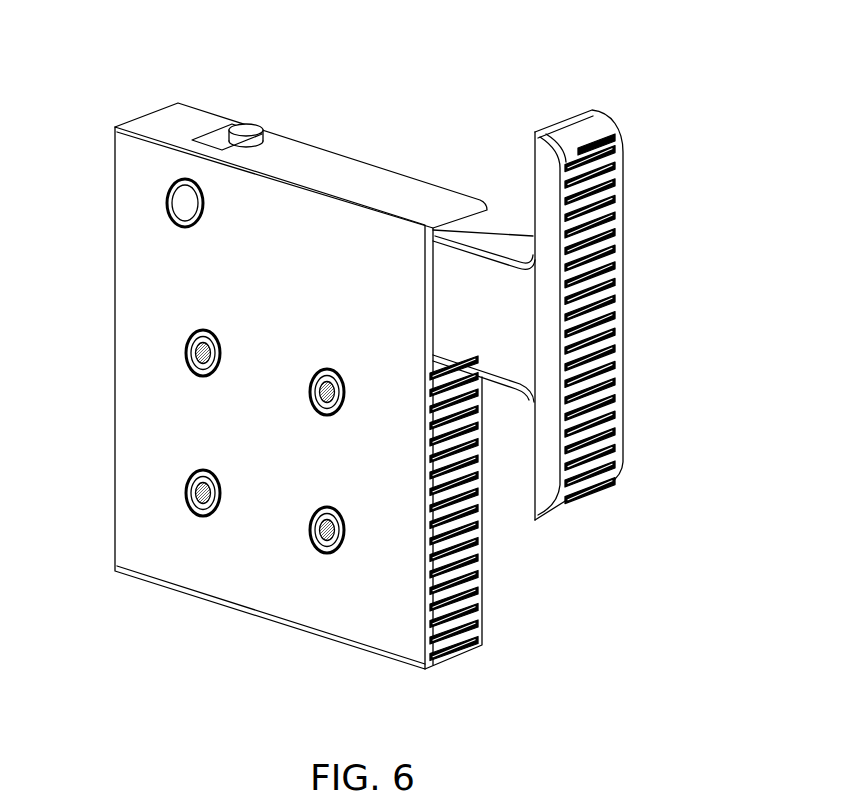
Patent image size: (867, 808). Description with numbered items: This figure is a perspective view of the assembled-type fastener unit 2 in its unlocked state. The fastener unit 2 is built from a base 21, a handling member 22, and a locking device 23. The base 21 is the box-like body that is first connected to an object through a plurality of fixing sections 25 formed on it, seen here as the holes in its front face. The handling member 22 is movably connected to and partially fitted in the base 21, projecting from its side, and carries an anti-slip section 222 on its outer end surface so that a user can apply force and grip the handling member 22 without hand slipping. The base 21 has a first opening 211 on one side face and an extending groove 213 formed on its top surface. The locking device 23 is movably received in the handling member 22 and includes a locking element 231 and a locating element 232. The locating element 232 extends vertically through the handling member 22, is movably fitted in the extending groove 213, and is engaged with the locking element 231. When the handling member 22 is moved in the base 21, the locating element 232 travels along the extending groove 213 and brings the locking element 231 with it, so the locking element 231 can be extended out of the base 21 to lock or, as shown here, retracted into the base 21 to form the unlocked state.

The assembled-type fastener unit 2 is at (372, 351).
The base 21 is at (331, 163).
The handling member 22 is at (633, 88).
The anti-slip section 222 is at (622, 178).
The locking device 23 is at (274, 95).
The locating element 232 is at (245, 125).
The locking element 231 is at (185, 205).
The first opening 211 is at (150, 187).
The extending groove 213 is at (212, 130).
The fixing sections 25 is at (200, 492).